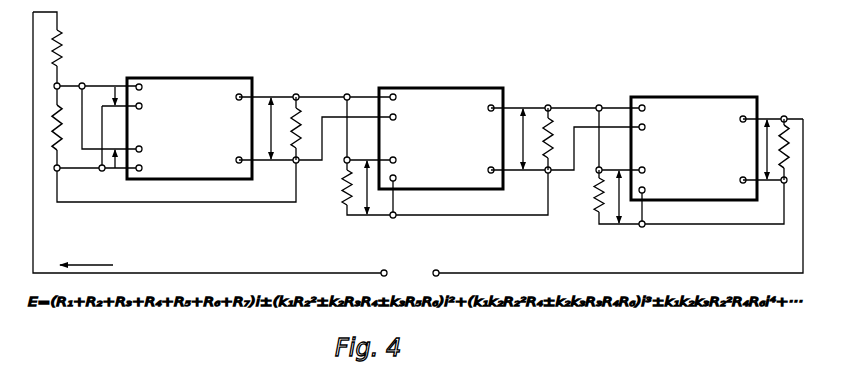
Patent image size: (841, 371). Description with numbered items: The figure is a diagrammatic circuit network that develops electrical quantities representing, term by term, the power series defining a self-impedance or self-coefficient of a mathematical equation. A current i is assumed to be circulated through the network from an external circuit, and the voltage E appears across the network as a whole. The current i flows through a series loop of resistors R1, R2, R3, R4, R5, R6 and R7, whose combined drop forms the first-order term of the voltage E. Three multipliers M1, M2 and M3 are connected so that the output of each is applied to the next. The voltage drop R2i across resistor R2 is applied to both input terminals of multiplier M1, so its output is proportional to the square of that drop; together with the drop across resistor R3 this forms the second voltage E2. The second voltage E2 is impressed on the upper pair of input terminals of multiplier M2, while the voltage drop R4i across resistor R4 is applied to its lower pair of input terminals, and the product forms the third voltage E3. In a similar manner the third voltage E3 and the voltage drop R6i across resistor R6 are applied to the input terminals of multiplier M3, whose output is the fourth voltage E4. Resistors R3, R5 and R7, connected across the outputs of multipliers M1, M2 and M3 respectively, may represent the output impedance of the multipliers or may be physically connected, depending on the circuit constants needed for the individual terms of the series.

The resistor R1 is at (49, 58).
The resistor R2 is at (49, 127).
The resistor R3 is at (303, 128).
The resistor R4 is at (433, 192).
The resistor R5 is at (556, 139).
The resistor R6 is at (678, 197).
The resistor R7 is at (791, 149).
The multiplier M1 is at (189, 128).
The multiplier M2 is at (441, 153).
The multiplier M3 is at (694, 162).
The voltage E is at (410, 274).
The second voltage E2 is at (283, 76).
The third voltage E3 is at (528, 84).
The fourth voltage E4 is at (767, 119).
The current i is at (86, 259).
The voltage drop across resistor R2 R2i is at (115, 86).
The voltage drop across resistor R4 R4i is at (367, 188).
The voltage drop across resistor R6 R6i is at (619, 200).